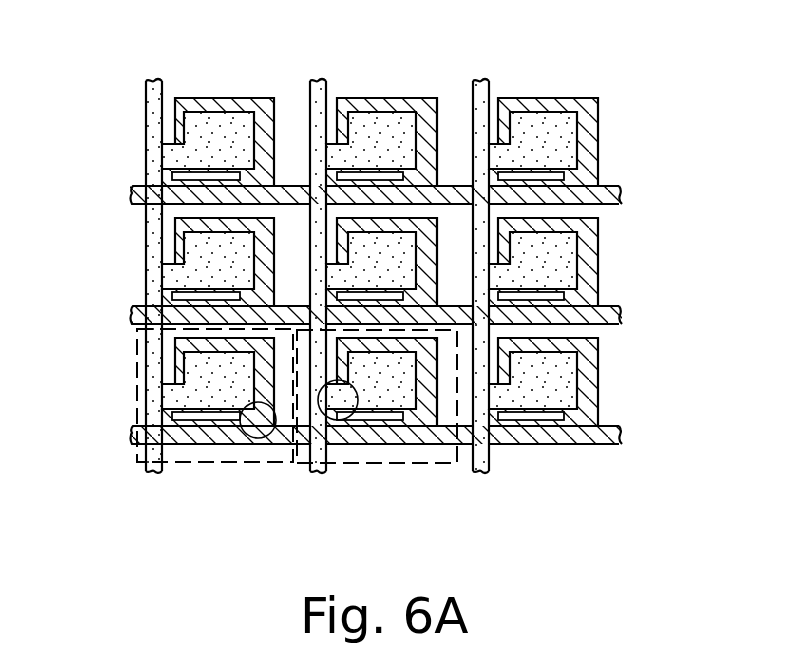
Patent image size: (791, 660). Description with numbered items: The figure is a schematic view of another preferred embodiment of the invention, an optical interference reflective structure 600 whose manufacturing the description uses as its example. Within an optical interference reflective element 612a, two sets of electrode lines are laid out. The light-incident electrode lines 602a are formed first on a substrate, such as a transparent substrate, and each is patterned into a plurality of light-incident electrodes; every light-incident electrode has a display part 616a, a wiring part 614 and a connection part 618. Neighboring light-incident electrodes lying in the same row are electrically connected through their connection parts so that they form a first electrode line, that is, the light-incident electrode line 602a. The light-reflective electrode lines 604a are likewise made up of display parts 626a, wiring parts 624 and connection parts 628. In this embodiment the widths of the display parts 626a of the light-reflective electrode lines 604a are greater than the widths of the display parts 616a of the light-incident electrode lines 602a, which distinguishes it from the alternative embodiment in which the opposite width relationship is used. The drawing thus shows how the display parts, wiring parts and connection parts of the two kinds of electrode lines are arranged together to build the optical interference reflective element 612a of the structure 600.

The optical interference reflective structure 600 is at (88, 571).
The light-incident electrode line 602a is at (590, 132).
The light-reflective electrode line 604a is at (218, 124).
The optical interference reflective element 612a is at (178, 453).
The wiring part 614 is at (316, 452).
The display part 616a is at (375, 387).
The connection part 618 is at (340, 400).
The wiring part 624 is at (205, 435).
The display part 626a is at (178, 341).
The connection part 628 is at (247, 440).